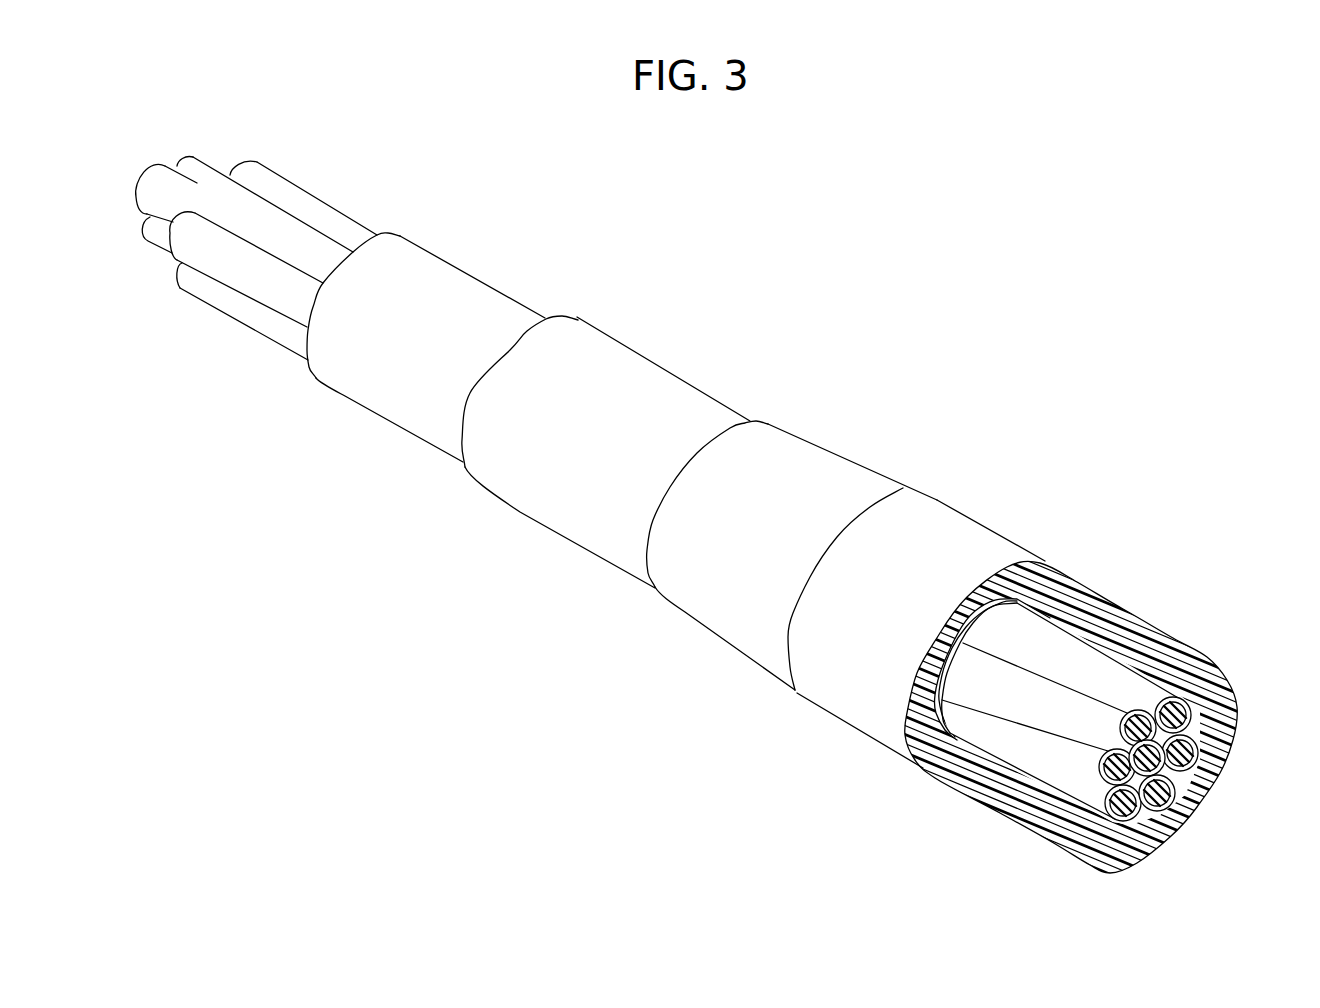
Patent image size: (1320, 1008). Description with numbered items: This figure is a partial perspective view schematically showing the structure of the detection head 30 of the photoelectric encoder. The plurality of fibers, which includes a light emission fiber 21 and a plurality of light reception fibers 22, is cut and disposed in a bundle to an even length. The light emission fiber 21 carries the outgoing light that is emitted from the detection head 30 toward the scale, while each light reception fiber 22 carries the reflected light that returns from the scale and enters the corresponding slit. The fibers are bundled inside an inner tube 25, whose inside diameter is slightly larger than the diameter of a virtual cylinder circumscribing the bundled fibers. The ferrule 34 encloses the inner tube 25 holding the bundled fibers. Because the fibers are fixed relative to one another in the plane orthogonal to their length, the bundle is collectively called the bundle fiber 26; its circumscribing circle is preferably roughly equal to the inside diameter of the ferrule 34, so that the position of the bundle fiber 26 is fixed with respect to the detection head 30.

The light emission fiber 21 is at (165, 165).
The light reception fiber 22 is at (343, 222).
The inner tube 25 is at (1027, 592).
The bundle fiber 26 is at (1058, 786).
The detection head 30 is at (1162, 512).
The ferrule 34 is at (1120, 617).